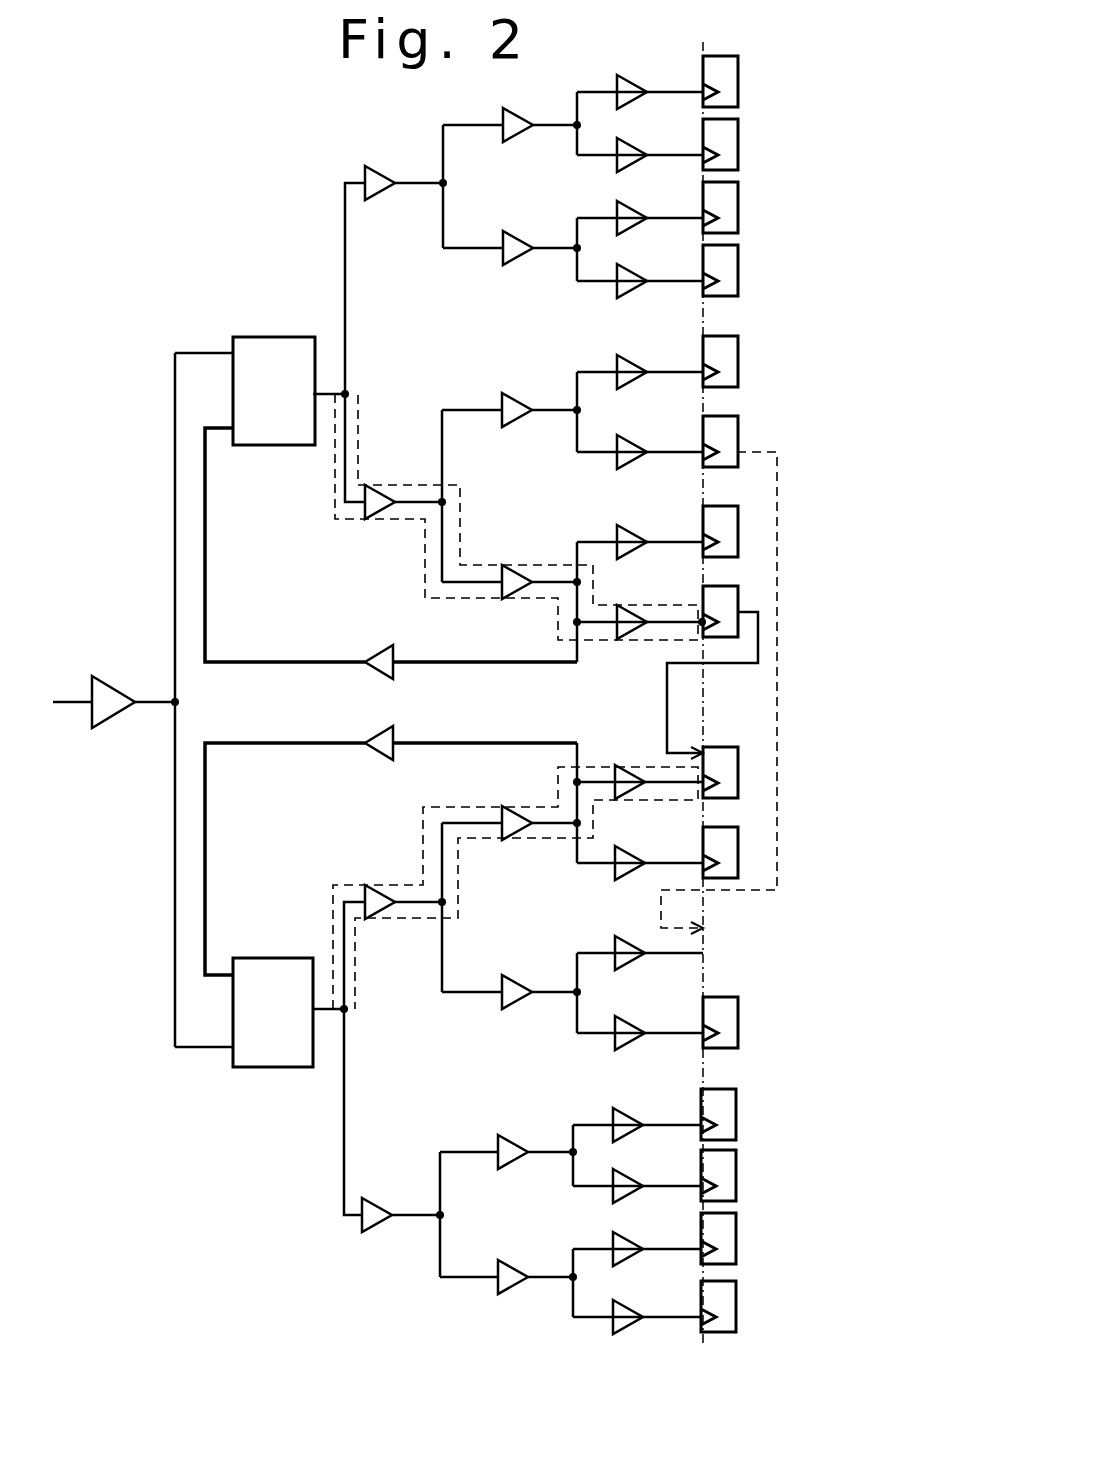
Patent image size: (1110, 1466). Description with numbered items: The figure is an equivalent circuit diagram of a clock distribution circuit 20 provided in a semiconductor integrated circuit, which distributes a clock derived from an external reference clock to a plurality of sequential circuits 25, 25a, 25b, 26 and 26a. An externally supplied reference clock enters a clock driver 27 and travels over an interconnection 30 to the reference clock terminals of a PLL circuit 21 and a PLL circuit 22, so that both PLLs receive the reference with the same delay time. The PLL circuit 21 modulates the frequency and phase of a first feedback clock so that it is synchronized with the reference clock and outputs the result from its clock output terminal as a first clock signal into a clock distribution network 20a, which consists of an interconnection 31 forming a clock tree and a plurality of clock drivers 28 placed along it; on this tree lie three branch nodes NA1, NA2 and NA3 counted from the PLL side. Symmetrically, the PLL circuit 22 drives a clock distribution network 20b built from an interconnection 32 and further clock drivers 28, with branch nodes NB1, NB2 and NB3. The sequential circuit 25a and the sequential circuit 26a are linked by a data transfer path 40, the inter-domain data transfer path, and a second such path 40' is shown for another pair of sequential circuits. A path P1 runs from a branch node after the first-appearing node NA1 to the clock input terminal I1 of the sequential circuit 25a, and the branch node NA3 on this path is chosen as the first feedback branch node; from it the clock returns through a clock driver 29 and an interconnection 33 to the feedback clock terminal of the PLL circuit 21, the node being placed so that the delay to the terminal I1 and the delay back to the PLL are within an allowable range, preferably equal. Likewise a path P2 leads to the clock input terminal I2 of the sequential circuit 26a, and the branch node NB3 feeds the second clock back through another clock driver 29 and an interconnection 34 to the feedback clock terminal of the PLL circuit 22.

The clock distribution circuit 20 is at (120, 258).
The clock distribution network 20a is at (330, 228).
The clock distribution network 20b is at (320, 1175).
The PLL circuit 21 is at (291, 337).
The PLL circuit 22 is at (262, 1067).
The sequential circuit 25 is at (738, 92).
The sequential circuit 25a is at (738, 600).
The sequential circuit 25b is at (738, 432).
The sequential circuit 26 is at (738, 847).
The sequential circuit 26a is at (738, 767).
The clock driver 27 is at (108, 680).
The clock driver 28 is at (518, 397).
The clock driver 29 is at (380, 648).
The interconnection 30 is at (175, 777).
The interconnection 31 is at (483, 410).
The interconnection 32 is at (597, 777).
The interconnection 33 is at (245, 662).
The interconnection 34 is at (245, 743).
The data transfer path 40 is at (761, 682).
The data transfer path 40' is at (771, 693).
The path P1 is at (335, 490).
The path P2 is at (333, 912).
The branch node NA1 is at (345, 394).
The branch node NA2 is at (442, 502).
The branch node NA3 is at (577, 622).
The branch node NB1 is at (344, 1009).
The branch node NB2 is at (442, 902).
The branch node NB3 is at (577, 782).
The clock input terminal I1 is at (700, 625).
The clock input terminal I2 is at (712, 788).